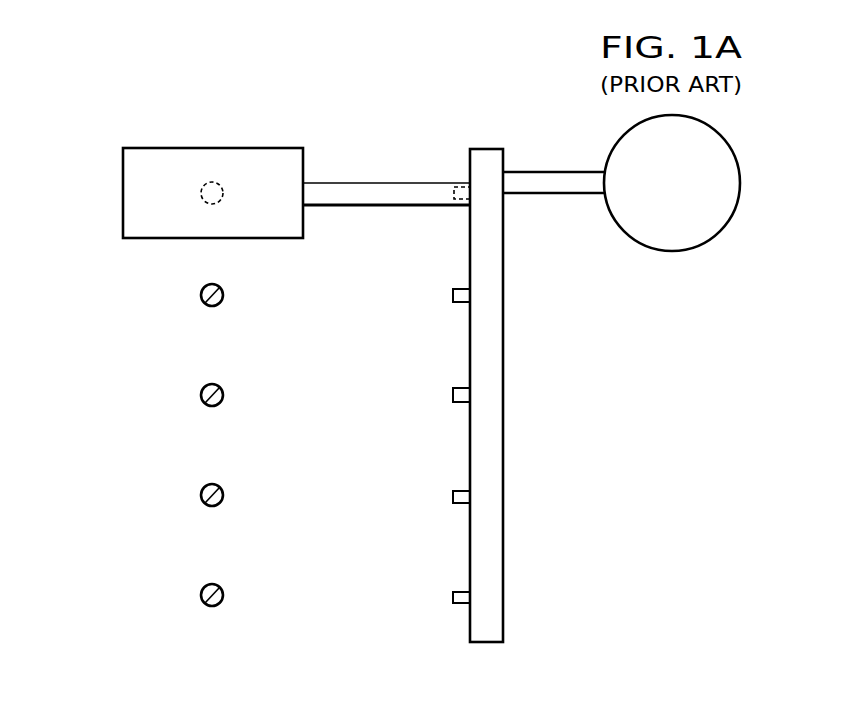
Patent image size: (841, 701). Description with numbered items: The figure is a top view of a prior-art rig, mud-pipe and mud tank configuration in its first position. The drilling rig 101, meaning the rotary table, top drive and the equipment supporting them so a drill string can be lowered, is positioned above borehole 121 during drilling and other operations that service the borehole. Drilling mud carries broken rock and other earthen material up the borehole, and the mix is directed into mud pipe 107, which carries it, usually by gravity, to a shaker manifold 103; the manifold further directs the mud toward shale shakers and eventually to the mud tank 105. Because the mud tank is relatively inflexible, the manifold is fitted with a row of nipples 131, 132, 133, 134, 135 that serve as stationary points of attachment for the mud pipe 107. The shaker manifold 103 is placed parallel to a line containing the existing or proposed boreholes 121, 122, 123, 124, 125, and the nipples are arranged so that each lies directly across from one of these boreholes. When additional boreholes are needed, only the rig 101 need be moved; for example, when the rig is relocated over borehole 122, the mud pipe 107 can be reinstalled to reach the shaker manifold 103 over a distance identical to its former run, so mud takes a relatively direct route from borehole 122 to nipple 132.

The drilling rig 101 is at (123, 190).
The shaker manifold 103 is at (467, 140).
The mud tank 105 is at (651, 199).
The mud pipe 107 is at (308, 140).
The borehole 121 is at (205, 201).
The borehole 122 is at (205, 304).
The borehole 123 is at (205, 404).
The borehole 124 is at (205, 504).
The borehole 125 is at (205, 604).
The nipple 131 is at (454, 192).
The nipple 132 is at (453, 295).
The nipple 133 is at (453, 395).
The nipple 134 is at (453, 497).
The nipple 135 is at (453, 597).